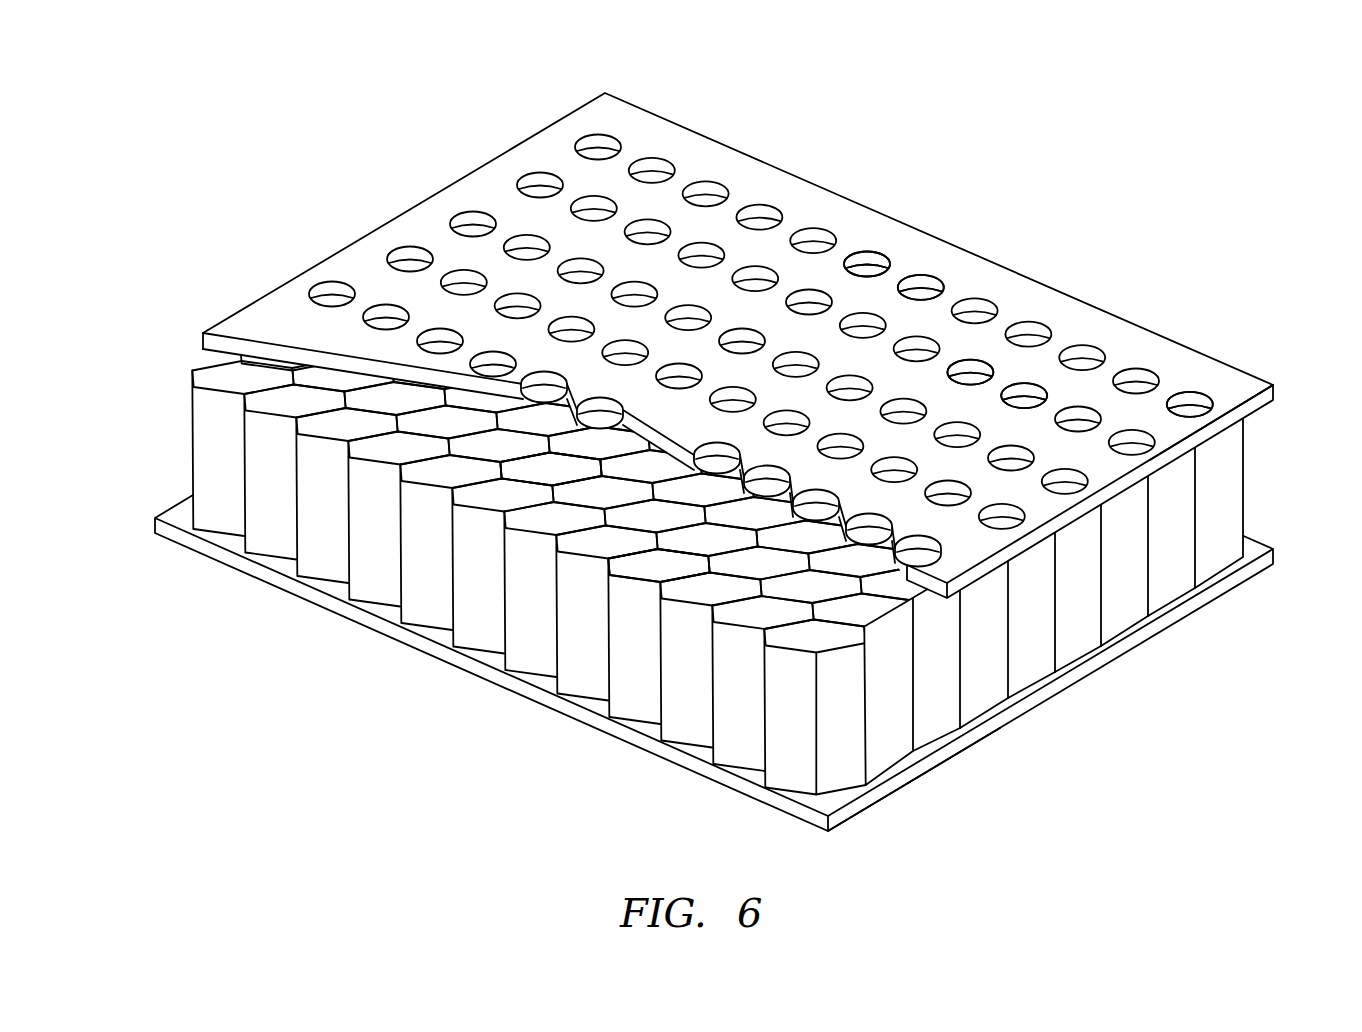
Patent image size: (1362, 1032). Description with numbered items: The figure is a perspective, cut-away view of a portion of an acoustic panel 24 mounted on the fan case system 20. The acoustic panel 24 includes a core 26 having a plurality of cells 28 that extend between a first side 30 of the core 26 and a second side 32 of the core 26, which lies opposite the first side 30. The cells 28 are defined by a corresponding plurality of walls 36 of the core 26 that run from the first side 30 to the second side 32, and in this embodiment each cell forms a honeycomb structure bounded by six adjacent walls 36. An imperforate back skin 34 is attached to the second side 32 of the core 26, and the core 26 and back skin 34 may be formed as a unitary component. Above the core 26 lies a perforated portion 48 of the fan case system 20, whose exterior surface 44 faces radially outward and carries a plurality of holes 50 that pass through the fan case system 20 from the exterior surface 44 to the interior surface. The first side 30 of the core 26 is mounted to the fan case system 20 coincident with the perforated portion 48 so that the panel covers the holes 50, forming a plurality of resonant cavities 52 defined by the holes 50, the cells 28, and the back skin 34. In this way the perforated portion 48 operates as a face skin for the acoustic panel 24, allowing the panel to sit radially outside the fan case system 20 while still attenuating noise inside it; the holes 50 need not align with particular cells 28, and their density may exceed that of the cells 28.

The fan case system 20 is at (552, 112).
The acoustic panel 24 is at (1160, 645).
The core 26 is at (1220, 500).
The cells 28 is at (542, 463).
The first side 30 is at (630, 580).
The second side 32 is at (743, 768).
The back skin 34 is at (888, 785).
The walls 36 is at (1027, 648).
The exterior surface 44 is at (652, 135).
The perforated portion 48 is at (1183, 377).
The holes 50 is at (937, 275).
The resonant cavities 52 is at (988, 358).